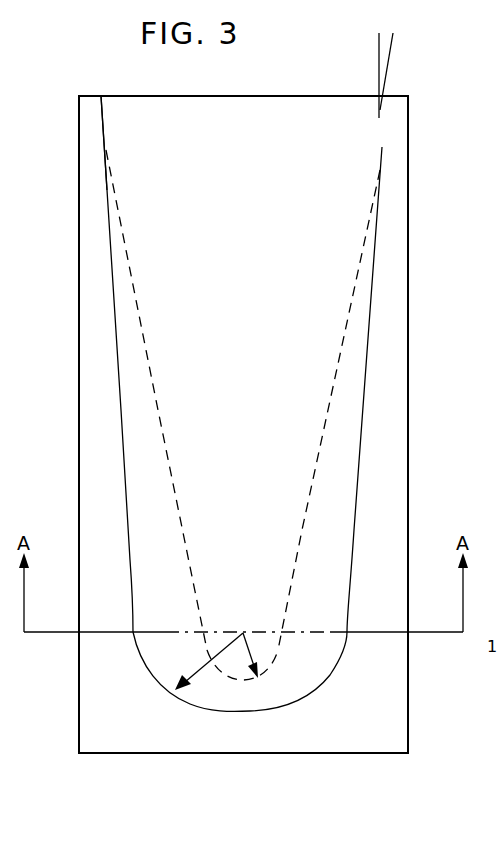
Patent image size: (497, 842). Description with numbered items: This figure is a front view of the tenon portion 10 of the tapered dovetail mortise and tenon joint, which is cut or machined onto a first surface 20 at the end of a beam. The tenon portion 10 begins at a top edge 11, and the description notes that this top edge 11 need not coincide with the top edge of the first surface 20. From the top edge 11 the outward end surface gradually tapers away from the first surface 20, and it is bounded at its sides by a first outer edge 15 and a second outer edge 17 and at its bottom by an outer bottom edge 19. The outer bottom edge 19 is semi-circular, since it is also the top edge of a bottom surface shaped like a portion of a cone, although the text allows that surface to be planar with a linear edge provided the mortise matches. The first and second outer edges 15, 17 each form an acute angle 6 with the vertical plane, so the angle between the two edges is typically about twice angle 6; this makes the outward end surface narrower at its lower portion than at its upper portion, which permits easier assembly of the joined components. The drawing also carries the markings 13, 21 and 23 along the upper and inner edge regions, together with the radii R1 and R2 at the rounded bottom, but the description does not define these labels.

The tenon portion 10 is at (424, 188).
The top edge 11 is at (257, 117).
The upper portion of first side wall 13 is at (100, 96).
The first outer edge 15 is at (120, 397).
The second outer edge 17 is at (357, 470).
The outer bottom edge 19 is at (277, 707).
The first surface 20 is at (113, 655).
The first inner cavity wall 21 is at (146, 352).
The second inner cavity wall 23 is at (333, 385).
The acute angle 6 is at (430, 72).
The inner radius R1 is at (252, 655).
The outer radius R2 is at (192, 675).